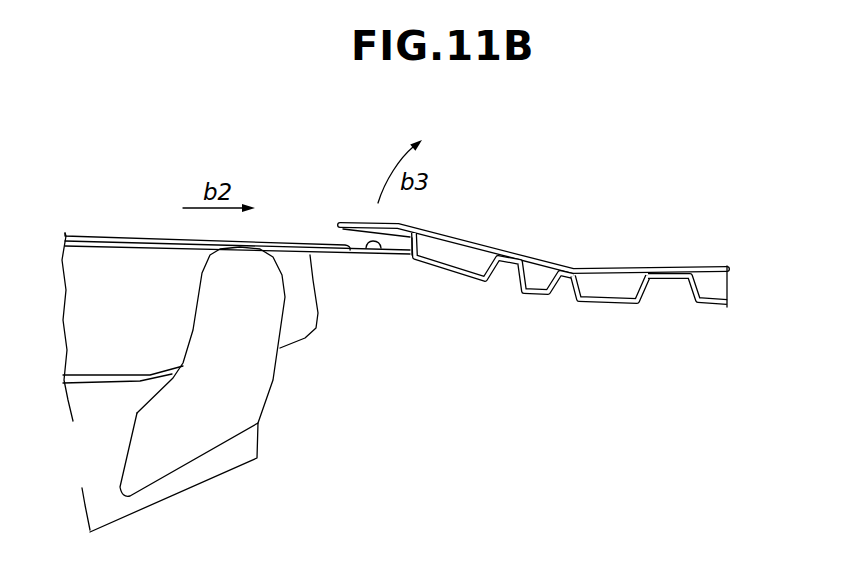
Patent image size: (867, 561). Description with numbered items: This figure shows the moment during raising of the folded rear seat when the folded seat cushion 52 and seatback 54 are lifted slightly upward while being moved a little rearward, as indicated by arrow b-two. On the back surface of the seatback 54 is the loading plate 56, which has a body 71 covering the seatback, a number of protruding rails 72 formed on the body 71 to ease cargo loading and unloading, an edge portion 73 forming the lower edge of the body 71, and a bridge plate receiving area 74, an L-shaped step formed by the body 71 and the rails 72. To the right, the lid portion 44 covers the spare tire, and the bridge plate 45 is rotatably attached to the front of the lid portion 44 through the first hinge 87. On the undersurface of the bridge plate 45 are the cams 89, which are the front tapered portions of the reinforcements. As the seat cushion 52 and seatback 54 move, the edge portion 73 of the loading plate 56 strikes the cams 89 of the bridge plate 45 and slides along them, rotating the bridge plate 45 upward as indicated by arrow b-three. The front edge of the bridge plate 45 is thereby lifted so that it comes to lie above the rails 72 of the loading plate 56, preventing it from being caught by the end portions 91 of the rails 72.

The lid portion 44 is at (662, 258).
The bridge plate 45 is at (522, 246).
The seat cushion 52 is at (248, 478).
The seatback 54 is at (117, 290).
The loading plate 56 is at (79, 222).
The body 71 is at (93, 247).
The protruding rails 72 is at (283, 237).
The edge portion 73 is at (428, 255).
The bridge plate receiving area 74 is at (357, 252).
The first hinge 87 is at (573, 268).
The cams 89 is at (412, 262).
The end portions 91 is at (356, 226).